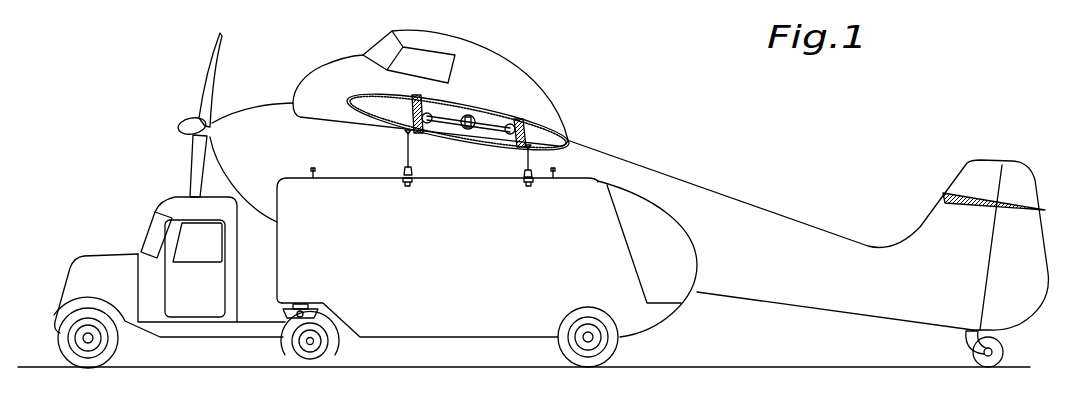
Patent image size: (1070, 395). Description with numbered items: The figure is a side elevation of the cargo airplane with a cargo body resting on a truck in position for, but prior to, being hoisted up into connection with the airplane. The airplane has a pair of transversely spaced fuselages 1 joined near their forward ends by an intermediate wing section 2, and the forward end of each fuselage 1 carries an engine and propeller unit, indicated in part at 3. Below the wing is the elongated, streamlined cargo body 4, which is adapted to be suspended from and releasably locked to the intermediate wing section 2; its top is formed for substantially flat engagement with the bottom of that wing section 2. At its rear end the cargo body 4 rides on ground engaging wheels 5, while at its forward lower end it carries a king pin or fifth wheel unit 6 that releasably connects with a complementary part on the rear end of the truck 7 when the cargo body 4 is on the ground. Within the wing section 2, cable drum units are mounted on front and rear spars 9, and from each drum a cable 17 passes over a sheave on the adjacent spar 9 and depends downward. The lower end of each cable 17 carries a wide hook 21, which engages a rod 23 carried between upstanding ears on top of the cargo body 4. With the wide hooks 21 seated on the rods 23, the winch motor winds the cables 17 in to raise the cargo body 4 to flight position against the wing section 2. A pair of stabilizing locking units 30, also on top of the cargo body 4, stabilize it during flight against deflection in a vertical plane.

The fuselage 1 is at (648, 165).
The intermediate wing section 2 is at (493, 108).
The engine and propeller unit 3 is at (237, 133).
The cargo body 4 is at (593, 255).
The ground engaging wheels 5 is at (618, 346).
The king pin or fifth wheel unit 6 is at (307, 305).
The truck 7 is at (173, 217).
The spar 9 is at (413, 113).
The cable 17 is at (409, 152).
The wide hook 21 is at (412, 170).
The rod 23 is at (408, 186).
The stabilizing locking unit 30 is at (317, 171).